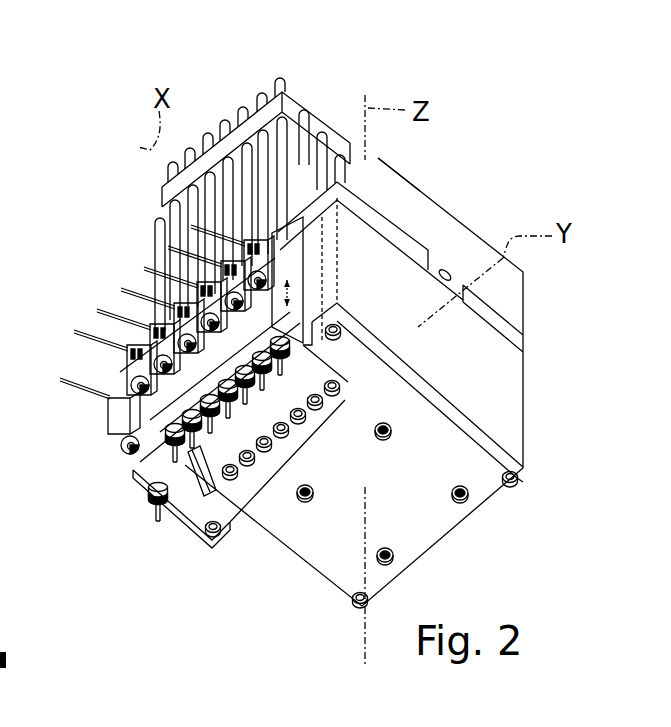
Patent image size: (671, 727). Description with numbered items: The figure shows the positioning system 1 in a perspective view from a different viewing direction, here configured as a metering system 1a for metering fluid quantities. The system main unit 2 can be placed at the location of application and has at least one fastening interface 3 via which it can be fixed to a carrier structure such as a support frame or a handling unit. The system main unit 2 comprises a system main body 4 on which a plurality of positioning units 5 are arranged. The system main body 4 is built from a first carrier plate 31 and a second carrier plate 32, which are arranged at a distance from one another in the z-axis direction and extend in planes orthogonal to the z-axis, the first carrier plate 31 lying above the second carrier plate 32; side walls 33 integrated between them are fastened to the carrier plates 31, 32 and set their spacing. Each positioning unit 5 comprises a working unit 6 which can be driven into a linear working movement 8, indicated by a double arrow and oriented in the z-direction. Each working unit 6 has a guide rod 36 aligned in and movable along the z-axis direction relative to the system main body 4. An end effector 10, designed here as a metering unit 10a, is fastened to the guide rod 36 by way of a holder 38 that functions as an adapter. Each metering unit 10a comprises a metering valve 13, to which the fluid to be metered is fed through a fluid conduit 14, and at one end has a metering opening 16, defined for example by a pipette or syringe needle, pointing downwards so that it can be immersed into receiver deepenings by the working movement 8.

The positioning system 1 is at (471, 127).
The metering system 1a is at (519, 147).
The system main unit 2 is at (471, 241).
The fastening interface 3 is at (397, 557).
The system main body 4 is at (508, 433).
The positioning unit 5 is at (347, 400).
The working unit 6 is at (292, 258).
The linear working movement 8 is at (303, 293).
The end effector 10 is at (318, 373).
The metering unit 10a is at (295, 325).
The metering valve 13 is at (118, 403).
The fluid conduit 14 is at (284, 80).
The metering opening 16 is at (160, 505).
The first carrier plate 31 is at (527, 338).
The second carrier plate 32 is at (525, 470).
The side walls 33 is at (508, 372).
The guide rod 36 is at (338, 183).
The holder 38 is at (190, 506).